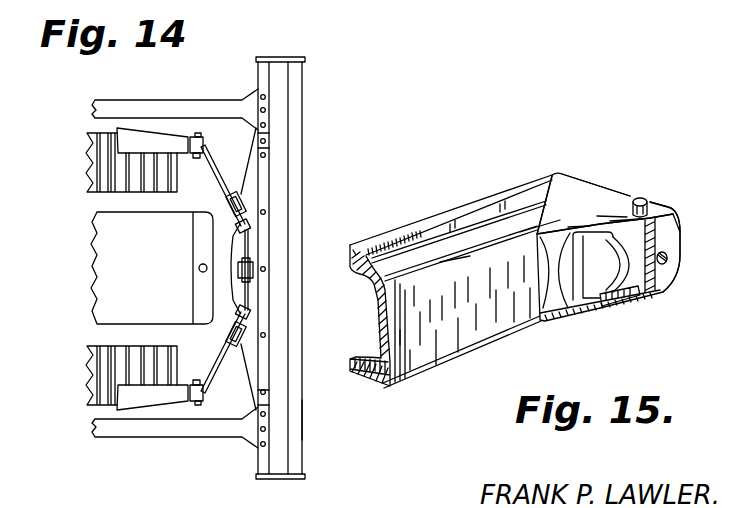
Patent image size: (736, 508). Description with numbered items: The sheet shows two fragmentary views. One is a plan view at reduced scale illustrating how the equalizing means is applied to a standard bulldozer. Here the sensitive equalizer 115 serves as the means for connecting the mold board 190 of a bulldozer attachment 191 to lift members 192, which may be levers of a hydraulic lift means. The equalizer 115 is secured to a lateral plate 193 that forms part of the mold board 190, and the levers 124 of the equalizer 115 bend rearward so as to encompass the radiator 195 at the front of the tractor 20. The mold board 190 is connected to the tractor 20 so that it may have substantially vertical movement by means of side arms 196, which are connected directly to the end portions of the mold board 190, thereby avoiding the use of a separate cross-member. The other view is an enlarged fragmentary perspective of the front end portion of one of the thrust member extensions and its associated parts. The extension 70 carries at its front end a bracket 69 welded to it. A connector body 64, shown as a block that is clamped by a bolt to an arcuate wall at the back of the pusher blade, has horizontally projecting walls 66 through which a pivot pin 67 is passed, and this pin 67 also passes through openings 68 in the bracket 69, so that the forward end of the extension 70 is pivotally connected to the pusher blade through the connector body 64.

In FIG. 14, the tractor 20 is at (80, 222).
In FIG. 14, the sensitive equalizer 115 is at (250, 249).
In FIG. 14, the levers 124 is at (219, 168).
In FIG. 14, the mold board 190 is at (281, 198).
In FIG. 14, the bulldozer attachment 191 is at (304, 418).
In FIG. 14, the lift members 192 is at (158, 137).
In FIG. 14, the lateral plate 193 is at (237, 249).
In FIG. 14, the radiator 195 is at (115, 283).
In FIG. 14, the side arms 196 is at (132, 107).
In FIG. 15, the connector body 64 is at (676, 266).
In FIG. 15, the horizontally projecting walls 66 is at (617, 307).
In FIG. 15, the pivot pin 67 is at (644, 198).
In FIG. 15, the openings 68 is at (676, 221).
In FIG. 15, the bracket 69 is at (575, 314).
In FIG. 15, the extension 70 is at (438, 356).